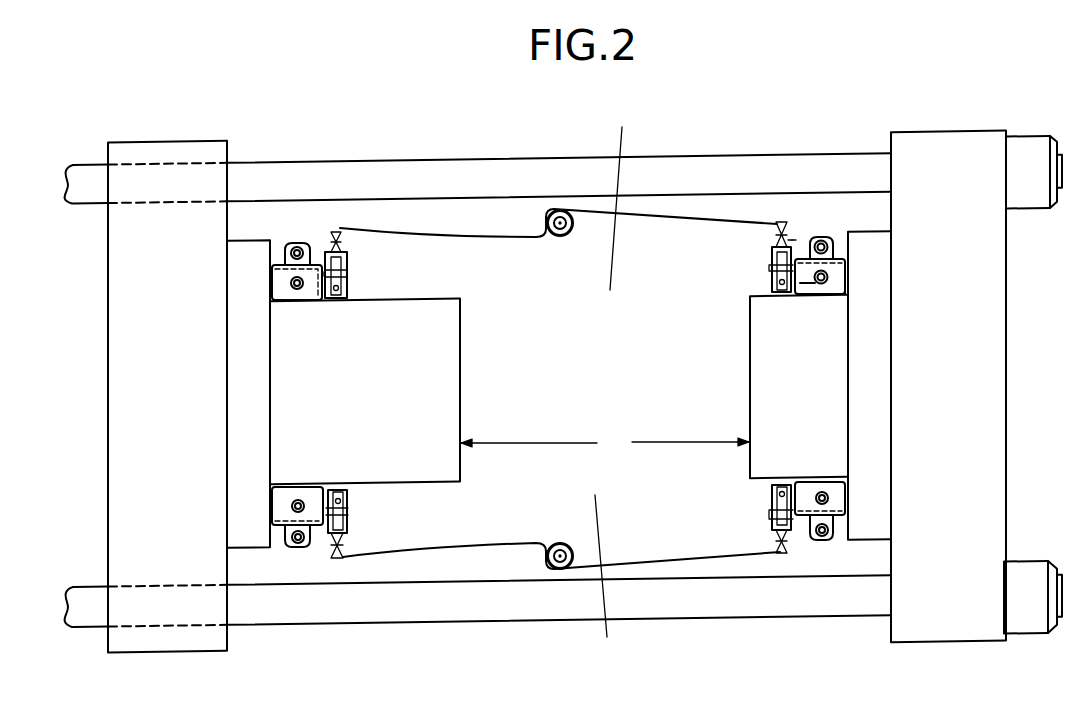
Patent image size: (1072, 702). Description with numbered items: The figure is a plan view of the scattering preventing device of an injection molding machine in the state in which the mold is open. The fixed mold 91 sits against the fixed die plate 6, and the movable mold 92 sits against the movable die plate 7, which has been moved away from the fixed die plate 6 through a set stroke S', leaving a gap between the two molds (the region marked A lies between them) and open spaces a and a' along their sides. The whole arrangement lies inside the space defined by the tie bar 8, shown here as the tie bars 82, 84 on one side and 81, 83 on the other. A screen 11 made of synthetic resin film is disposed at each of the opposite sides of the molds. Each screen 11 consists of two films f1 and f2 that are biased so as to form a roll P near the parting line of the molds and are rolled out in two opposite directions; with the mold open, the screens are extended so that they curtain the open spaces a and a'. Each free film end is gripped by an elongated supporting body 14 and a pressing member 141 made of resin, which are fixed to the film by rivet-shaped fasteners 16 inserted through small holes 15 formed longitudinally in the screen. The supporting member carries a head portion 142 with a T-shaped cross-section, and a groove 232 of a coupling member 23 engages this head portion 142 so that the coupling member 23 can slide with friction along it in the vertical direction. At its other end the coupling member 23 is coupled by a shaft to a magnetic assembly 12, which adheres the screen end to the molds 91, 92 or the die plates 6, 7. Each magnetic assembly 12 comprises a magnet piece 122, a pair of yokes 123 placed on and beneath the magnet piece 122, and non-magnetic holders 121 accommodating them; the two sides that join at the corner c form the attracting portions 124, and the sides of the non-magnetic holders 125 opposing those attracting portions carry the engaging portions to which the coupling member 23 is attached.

The fixed die plate 6 is at (985, 210).
The movable die plate 7 is at (213, 236).
The tie bar 8 is at (563, 392).
The tie bar 81 is at (563, 620).
The tie bar 82 is at (563, 163).
The tie bar 83 is at (382, 610).
The tie bar 84 is at (385, 167).
The fixed mold 91 is at (758, 402).
The movable mold 92 is at (443, 433).
The screen 11 is at (560, 379).
The magnetic assembly 12 is at (592, 391).
The non-magnetic holder 121 is at (847, 283).
The magnet piece 122 is at (891, 314).
The yoke 123 is at (821, 293).
The attracting portion 124 is at (810, 283).
The non-magnetic holder 125 is at (825, 239).
The elongated supporting body 14 is at (540, 392).
The pressing member 141 is at (558, 392).
The head portion 142 is at (773, 258).
The small hole 15 is at (791, 240).
The fastener 16 is at (831, 170).
The coupling member 23 is at (558, 393).
The groove 232 is at (771, 270).
The roll P is at (574, 224).
The space A is at (615, 393).
The set stroke S' is at (605, 442).
The open space a is at (603, 581).
The open space a' is at (621, 196).
The corner c is at (847, 296).
The film f1 is at (603, 207).
The film f2 is at (510, 235).